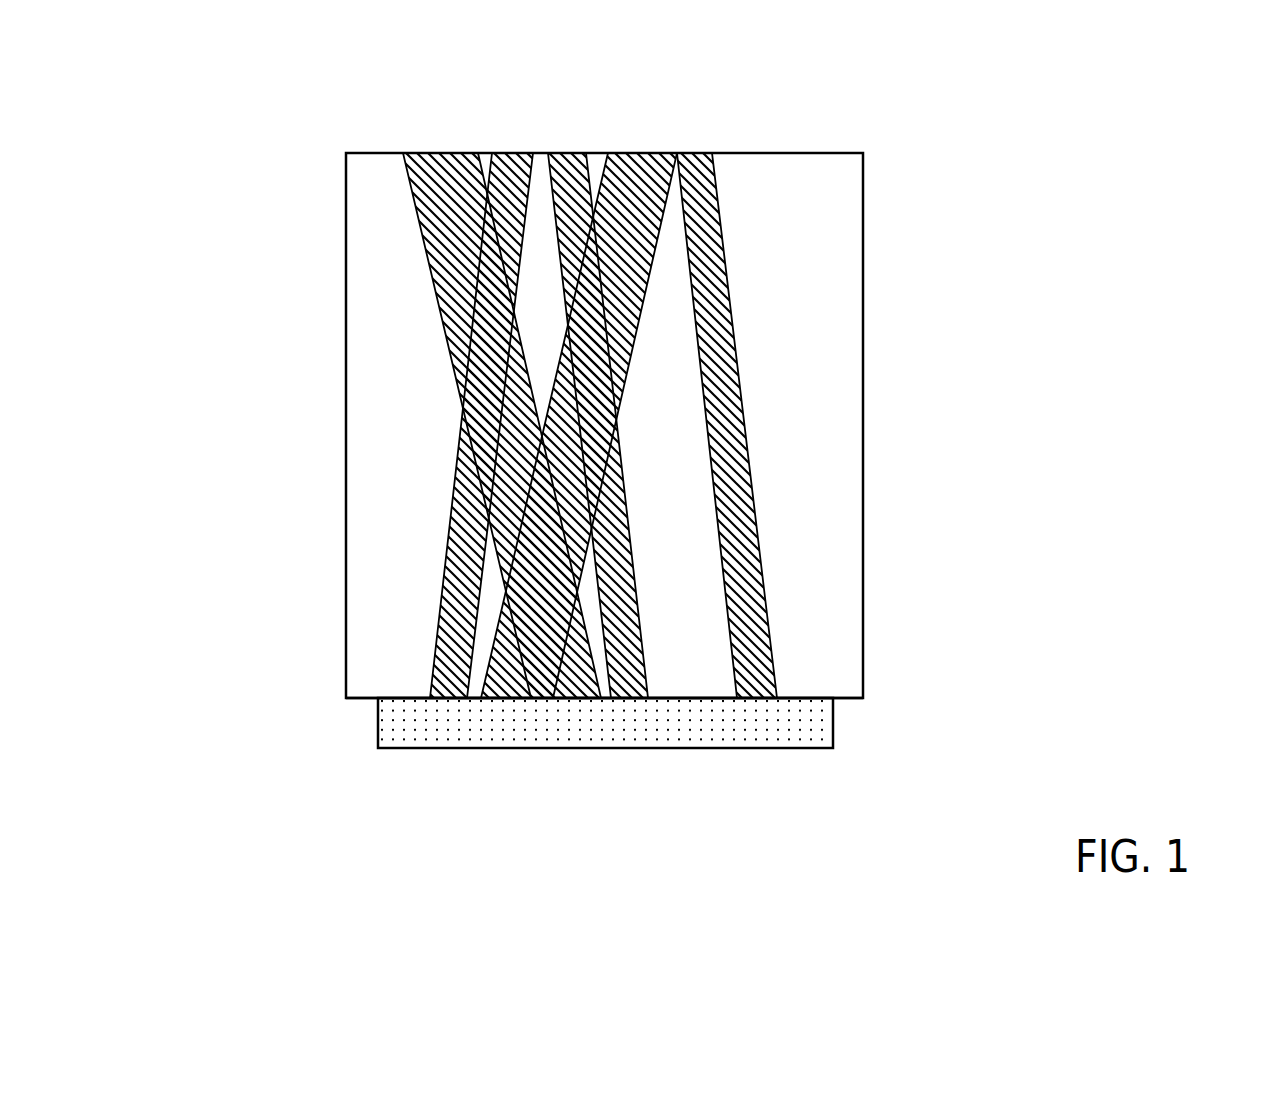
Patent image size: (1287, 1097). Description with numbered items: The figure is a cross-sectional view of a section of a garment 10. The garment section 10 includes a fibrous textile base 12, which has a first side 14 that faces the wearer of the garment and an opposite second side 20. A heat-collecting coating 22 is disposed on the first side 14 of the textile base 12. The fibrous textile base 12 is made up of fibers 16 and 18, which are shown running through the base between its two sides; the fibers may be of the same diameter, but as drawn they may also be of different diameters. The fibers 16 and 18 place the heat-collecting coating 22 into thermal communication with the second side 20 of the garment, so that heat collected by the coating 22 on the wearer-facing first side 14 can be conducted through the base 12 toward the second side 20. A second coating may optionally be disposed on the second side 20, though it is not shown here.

The garment section 10 is at (328, 103).
The fibrous textile base 12 is at (953, 153).
The first side 14 is at (843, 700).
The fiber 16 is at (722, 245).
The fiber 18 is at (652, 168).
The second side 20 is at (492, 152).
The heat-collecting coating 22 is at (522, 722).